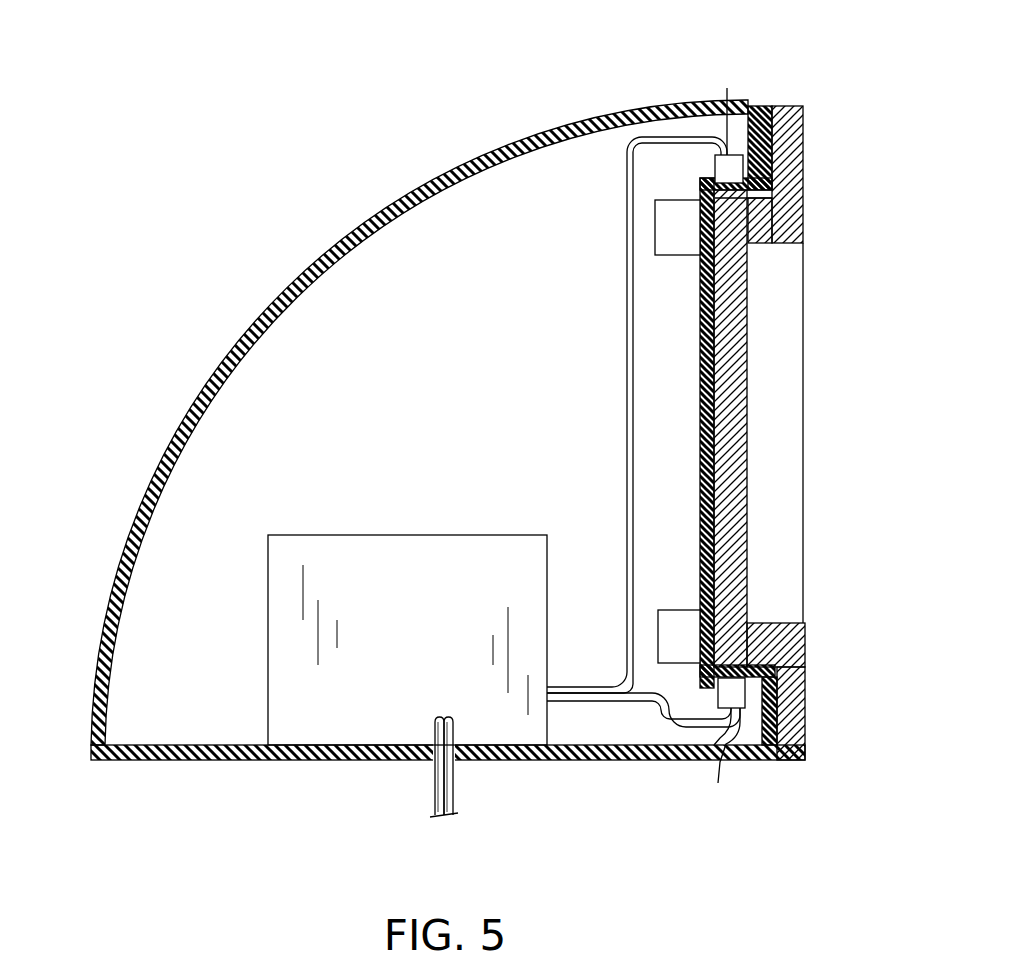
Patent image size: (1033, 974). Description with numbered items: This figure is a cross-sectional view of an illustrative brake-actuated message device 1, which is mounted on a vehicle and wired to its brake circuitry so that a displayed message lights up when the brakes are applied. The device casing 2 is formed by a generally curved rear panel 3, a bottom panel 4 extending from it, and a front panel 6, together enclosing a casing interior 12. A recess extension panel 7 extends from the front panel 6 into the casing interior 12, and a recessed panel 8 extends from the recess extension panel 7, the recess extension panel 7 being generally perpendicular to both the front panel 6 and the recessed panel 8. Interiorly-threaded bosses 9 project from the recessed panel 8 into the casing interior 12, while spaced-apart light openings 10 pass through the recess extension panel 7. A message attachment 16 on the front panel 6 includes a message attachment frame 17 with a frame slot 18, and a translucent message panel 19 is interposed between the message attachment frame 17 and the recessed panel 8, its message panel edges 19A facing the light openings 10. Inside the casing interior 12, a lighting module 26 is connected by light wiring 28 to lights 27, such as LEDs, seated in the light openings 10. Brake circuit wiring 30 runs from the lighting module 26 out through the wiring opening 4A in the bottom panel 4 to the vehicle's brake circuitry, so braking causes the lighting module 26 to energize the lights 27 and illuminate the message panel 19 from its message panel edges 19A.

The brake-actuated message device 1 is at (292, 142).
The device casing 2 is at (120, 558).
The rear panel 3 is at (306, 277).
The bottom panel 4 is at (212, 762).
The wiring opening 4A is at (430, 762).
The front panel 6 is at (803, 742).
The recess extension panel 7 is at (757, 193).
The recessed panel 8 is at (715, 340).
The interiorly-threaded boss 9 is at (670, 255).
The light opening 10 is at (716, 168).
The casing interior 12 is at (268, 410).
The message attachment 16 is at (808, 106).
The message attachment frame 17 is at (803, 725).
The frame slot 18 is at (780, 623).
The message panel 19 is at (747, 496).
The message panel edge 19A is at (715, 189).
The lighting module 26 is at (340, 536).
The light 27 is at (724, 433).
The light wiring 28 is at (628, 458).
The brake circuit wiring 30 is at (453, 793).